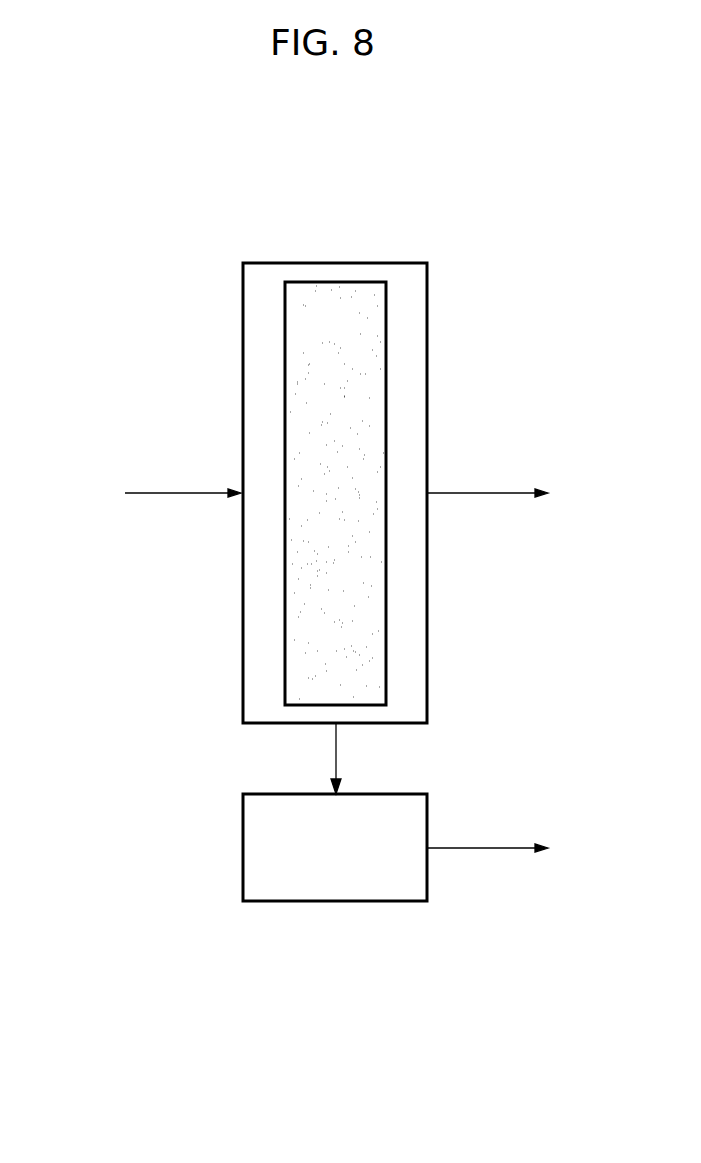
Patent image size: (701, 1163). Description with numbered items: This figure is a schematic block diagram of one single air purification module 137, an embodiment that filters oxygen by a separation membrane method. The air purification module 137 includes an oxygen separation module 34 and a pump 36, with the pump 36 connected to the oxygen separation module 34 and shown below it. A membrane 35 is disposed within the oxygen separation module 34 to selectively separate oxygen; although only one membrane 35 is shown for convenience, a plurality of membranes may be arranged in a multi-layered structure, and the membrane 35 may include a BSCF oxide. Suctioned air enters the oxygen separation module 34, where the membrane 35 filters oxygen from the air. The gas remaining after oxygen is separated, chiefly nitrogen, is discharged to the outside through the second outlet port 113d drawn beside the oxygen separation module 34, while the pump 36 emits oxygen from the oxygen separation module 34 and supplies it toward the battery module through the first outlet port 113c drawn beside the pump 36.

The air purification module 137 is at (152, 230).
The oxygen separation module 34 is at (427, 319).
The membrane 35 is at (386, 358).
The pump 36 is at (328, 901).
The first outlet port 113d is at (479, 496).
The second outlet port 113c is at (479, 851).